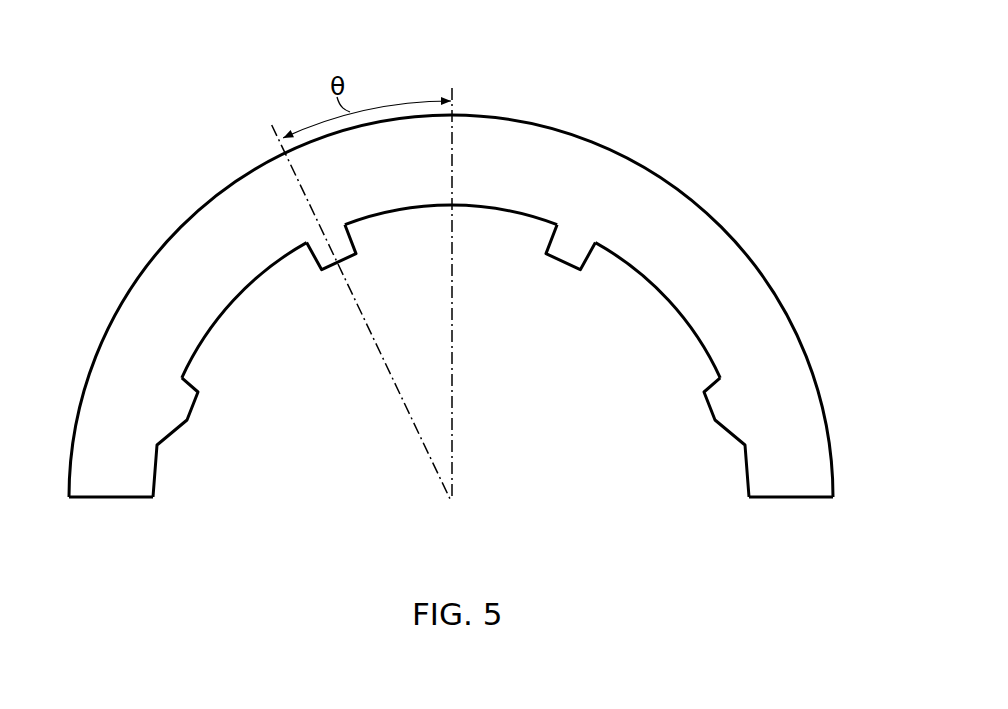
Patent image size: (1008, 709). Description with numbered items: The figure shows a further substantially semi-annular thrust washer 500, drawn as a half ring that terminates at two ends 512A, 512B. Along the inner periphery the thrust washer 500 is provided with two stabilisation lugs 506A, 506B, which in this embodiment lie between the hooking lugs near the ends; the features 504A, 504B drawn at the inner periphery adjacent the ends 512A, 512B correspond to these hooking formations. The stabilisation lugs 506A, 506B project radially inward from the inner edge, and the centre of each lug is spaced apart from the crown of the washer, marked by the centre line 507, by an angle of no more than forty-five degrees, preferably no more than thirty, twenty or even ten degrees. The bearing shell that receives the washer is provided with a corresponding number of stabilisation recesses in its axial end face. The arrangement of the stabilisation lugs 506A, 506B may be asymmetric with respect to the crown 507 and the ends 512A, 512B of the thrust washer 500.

The thrust washer 500 is at (777, 90).
The first end hook feature 504A is at (193, 410).
The second end hook feature 504B is at (707, 408).
The stabilisation lug 506A is at (323, 250).
The stabilisation lug 506B is at (573, 247).
The centre line 507 is at (453, 112).
The end 512A is at (112, 498).
The end 512B is at (788, 500).